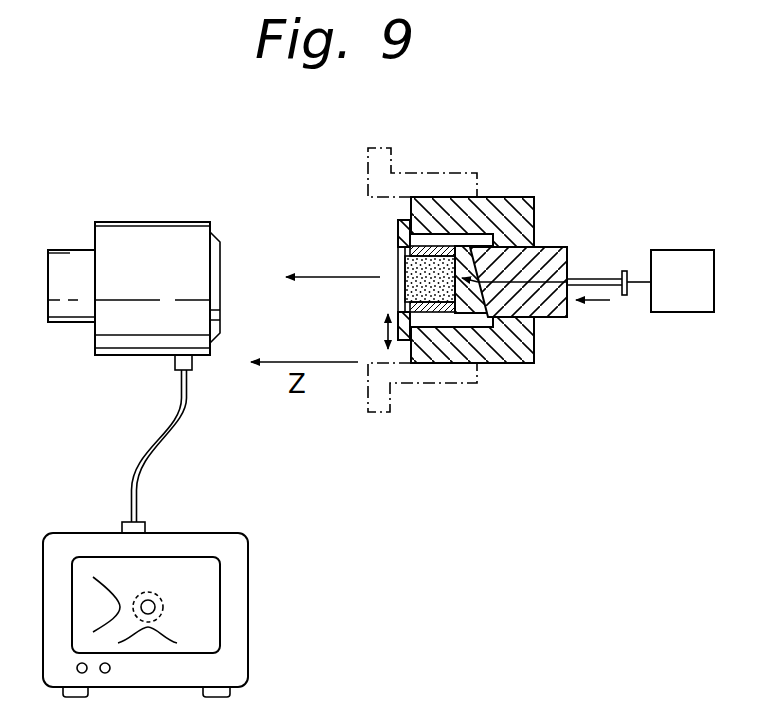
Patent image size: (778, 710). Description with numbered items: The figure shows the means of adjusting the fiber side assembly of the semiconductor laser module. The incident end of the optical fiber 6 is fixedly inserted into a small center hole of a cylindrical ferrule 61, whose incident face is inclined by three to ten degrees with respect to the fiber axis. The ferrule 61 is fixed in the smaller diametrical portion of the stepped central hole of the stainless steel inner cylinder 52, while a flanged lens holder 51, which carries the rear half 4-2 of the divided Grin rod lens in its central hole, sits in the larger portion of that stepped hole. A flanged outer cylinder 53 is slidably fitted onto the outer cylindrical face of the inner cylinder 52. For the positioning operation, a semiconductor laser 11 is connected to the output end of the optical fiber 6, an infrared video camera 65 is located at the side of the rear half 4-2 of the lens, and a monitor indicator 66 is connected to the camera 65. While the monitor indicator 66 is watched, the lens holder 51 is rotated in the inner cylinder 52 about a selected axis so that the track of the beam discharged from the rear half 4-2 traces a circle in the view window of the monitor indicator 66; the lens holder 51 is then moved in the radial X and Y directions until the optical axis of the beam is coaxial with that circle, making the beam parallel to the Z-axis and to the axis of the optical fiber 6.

The outer cylinder 53 is at (392, 158).
The rear half of the divided Grin rod lens 4-2 is at (446, 262).
The inner cylinder 52 is at (524, 214).
The lens holder 51 is at (397, 241).
The optical fiber 6 is at (597, 278).
The semiconductor laser 11 is at (687, 255).
The cylindrical ferrule 61 is at (560, 323).
The infrared video camera 65 is at (143, 237).
The monitor indicator 66 is at (207, 576).